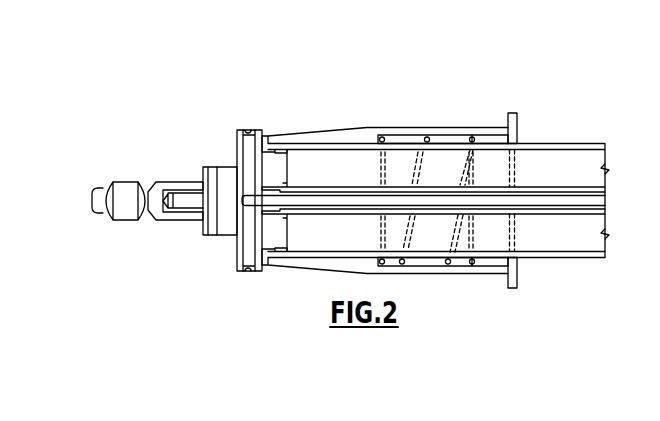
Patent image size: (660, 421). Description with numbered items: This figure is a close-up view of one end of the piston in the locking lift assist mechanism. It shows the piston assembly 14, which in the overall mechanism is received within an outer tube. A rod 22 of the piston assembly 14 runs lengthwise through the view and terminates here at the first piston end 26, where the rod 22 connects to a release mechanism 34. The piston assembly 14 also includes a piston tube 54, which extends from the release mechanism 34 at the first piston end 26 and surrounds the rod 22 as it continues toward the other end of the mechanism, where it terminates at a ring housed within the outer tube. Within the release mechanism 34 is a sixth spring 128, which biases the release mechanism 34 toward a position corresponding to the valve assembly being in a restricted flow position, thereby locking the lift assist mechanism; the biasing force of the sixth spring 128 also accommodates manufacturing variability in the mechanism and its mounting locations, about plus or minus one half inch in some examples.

The piston assembly 14 is at (544, 104).
The rod 22 is at (552, 187).
The first piston end 26 is at (224, 151).
The release mechanism 34 is at (284, 104).
The piston tube 54 is at (595, 143).
The sixth spring 128 is at (427, 138).